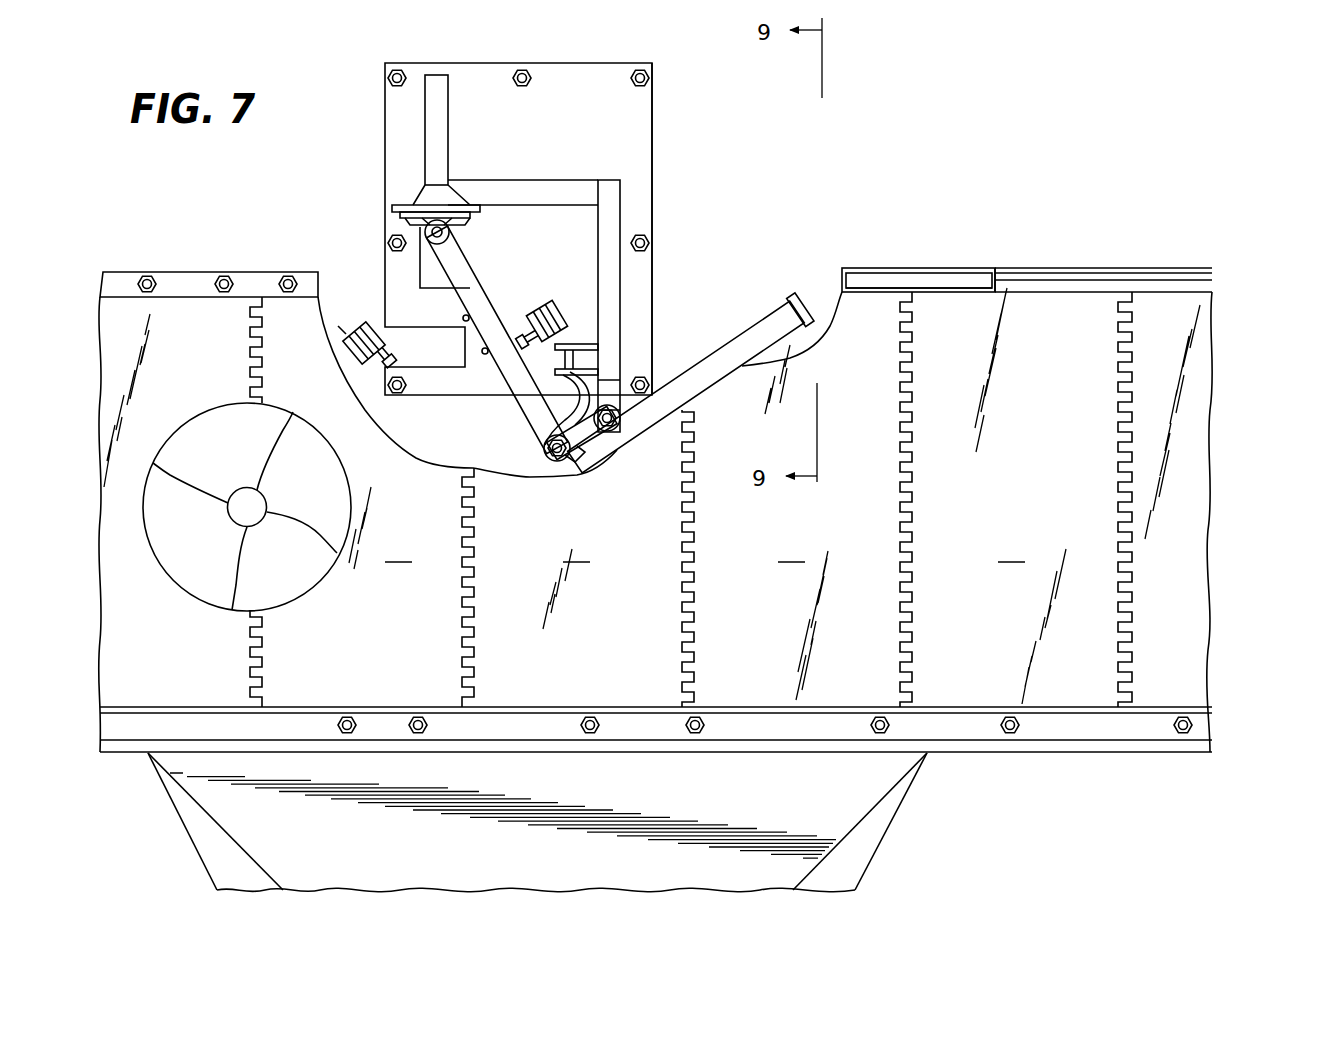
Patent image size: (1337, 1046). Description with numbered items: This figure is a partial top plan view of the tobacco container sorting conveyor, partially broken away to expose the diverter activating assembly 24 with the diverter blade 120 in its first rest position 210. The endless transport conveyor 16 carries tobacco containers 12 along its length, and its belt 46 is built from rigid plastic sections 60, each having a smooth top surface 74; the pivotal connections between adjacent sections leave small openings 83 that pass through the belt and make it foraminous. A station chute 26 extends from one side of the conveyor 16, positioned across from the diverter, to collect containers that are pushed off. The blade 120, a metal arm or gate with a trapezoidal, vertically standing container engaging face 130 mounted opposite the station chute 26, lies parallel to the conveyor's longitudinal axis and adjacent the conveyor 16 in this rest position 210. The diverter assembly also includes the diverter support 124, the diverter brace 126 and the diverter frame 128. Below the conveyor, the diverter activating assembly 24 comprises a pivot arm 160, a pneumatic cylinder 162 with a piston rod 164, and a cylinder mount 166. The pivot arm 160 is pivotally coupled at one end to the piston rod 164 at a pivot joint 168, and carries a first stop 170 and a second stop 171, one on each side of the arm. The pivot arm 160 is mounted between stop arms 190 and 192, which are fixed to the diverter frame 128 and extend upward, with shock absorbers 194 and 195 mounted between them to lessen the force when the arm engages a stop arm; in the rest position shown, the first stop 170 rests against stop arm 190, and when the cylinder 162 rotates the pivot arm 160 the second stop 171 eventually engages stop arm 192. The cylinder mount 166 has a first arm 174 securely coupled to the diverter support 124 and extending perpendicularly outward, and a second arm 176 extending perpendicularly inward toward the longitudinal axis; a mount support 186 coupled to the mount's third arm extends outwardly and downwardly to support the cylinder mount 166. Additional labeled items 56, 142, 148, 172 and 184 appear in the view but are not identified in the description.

The tobacco containers 12 is at (178, 590).
The endless transport conveyor 16 is at (1216, 622).
The diverter activating assembly 24 is at (664, 222).
The station chute 26 is at (888, 833).
The belt 46 is at (1025, 290).
The rail strip 56 is at (1085, 292).
The rigid plastic sections 60 is at (705, 550).
The smooth top surface 74 is at (1160, 290).
The openings 83 is at (474, 658).
The blade 120 is at (925, 270).
The diverter support 124 is at (412, 203).
The diverter brace 126 is at (448, 112).
The diverter frame 128 is at (652, 118).
The container engaging face 130 is at (945, 293).
The pivot bracket 142 is at (425, 226).
The pivot pin 148 is at (450, 232).
The pivot arm 160 is at (478, 290).
The pneumatic cylinder 162 is at (672, 378).
The piston rod 164 is at (588, 456).
The cylinder mount 166 is at (622, 188).
The pivot joint 168 is at (553, 460).
The first stop 170 is at (463, 318).
The second stop 171 is at (485, 354).
The coupling 172 is at (576, 468).
The first arm 174 is at (563, 182).
The second arm 176 is at (621, 270).
The pivot bolt 184 is at (612, 434).
The mount support 186 is at (542, 426).
The stop arm 190 is at (548, 303).
The stop arm 192 is at (360, 318).
The shock absorber 194 is at (560, 333).
The shock absorber 195 is at (346, 333).
The first rest position 210 is at (873, 268).